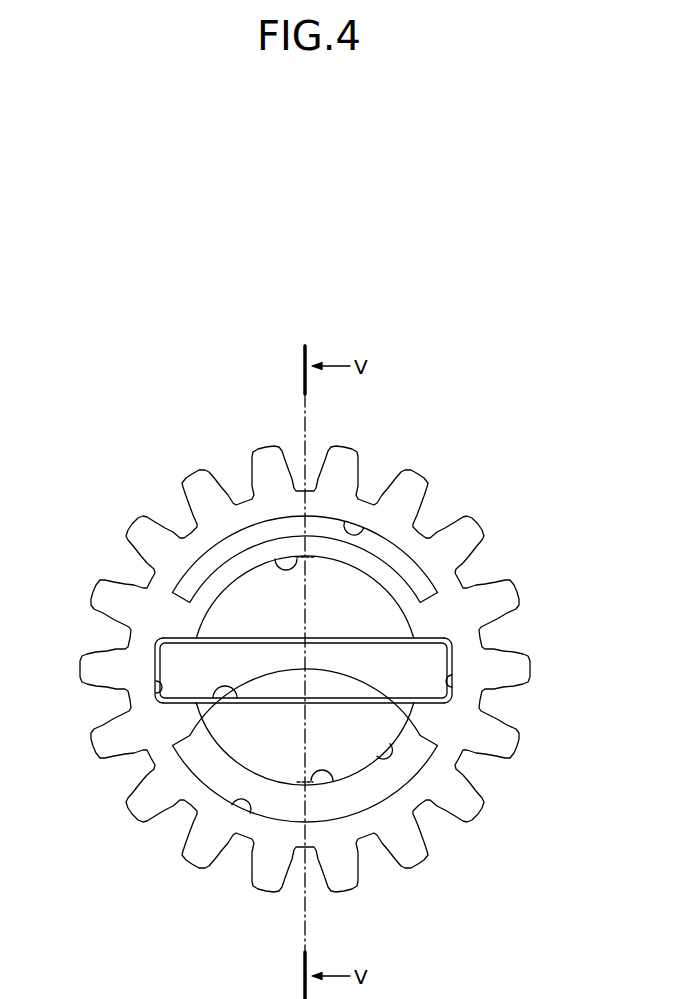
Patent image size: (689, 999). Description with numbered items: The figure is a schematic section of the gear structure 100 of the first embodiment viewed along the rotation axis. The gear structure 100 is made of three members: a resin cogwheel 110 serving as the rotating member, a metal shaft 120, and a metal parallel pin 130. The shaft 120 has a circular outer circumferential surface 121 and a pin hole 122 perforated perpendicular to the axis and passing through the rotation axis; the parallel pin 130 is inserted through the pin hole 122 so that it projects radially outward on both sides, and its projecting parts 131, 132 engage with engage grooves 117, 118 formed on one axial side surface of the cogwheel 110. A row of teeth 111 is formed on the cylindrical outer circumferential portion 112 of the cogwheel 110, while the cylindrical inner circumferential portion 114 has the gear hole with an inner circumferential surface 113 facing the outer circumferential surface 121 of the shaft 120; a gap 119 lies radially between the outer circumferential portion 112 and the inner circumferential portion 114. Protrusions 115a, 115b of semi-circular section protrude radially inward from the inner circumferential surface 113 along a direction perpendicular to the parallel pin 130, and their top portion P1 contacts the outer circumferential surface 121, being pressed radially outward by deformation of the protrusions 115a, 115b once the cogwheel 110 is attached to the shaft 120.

The gear structure 100 is at (100, 503).
The cogwheel 110 is at (427, 460).
The teeth 111 is at (474, 530).
The outer circumferential portion 112 is at (447, 578).
The inner circumferential surface 113 is at (380, 743).
The inner circumferential portion 114 is at (367, 785).
The protrusion 115a is at (314, 778).
The protrusion 115b is at (278, 560).
The engage groove 117 is at (455, 690).
The engage groove 118 is at (153, 678).
The gap 119 is at (352, 520).
The shaft 120 is at (202, 610).
The outer circumferential surface 121 is at (216, 592).
The pin hole 122 is at (214, 702).
The parallel pin 130 is at (405, 708).
The projecting part 131 is at (443, 648).
The projecting part 132 is at (168, 654).
The top portion P1 is at (312, 566).